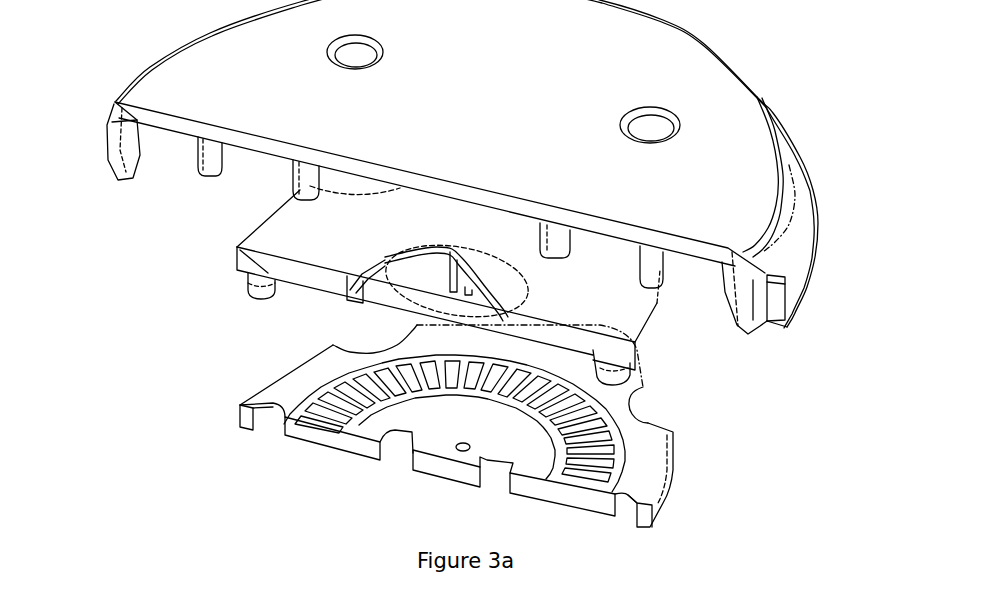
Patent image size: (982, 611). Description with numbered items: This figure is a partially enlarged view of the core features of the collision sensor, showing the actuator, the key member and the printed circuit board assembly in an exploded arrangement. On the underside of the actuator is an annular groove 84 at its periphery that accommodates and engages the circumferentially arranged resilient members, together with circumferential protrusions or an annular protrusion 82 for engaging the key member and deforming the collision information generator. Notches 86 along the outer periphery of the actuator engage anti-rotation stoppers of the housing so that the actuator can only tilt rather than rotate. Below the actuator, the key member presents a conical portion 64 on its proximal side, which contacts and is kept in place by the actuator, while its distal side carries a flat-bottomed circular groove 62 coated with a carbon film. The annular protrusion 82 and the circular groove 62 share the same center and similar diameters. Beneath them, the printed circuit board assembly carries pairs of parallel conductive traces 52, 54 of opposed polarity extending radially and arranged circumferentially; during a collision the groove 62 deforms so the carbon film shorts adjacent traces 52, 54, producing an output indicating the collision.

The conical portion 64 is at (500, 277).
The annular groove 84 is at (184, 131).
The annular protrusion 82 is at (312, 186).
The notch 86 is at (765, 321).
The circular groove 62 is at (325, 283).
The conductive trace 52 is at (613, 433).
The conductive trace 54 is at (458, 385).